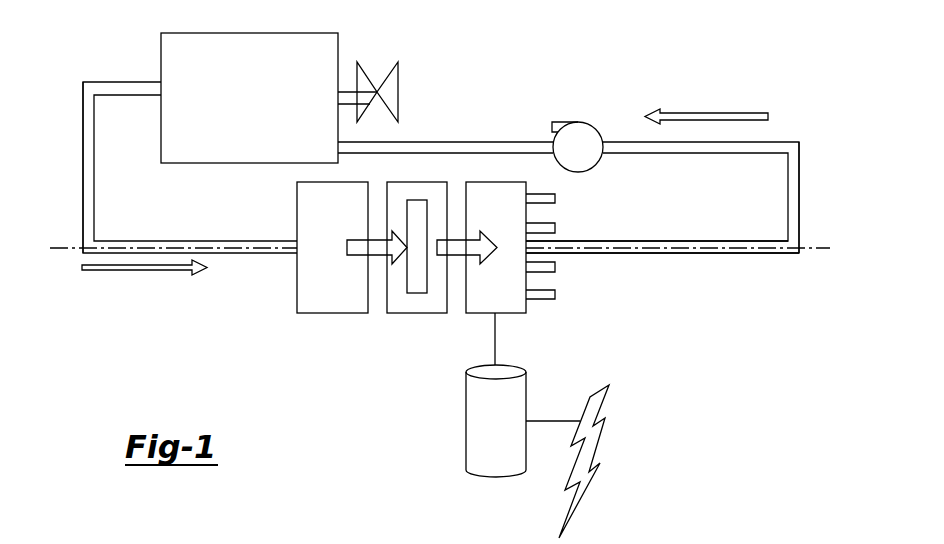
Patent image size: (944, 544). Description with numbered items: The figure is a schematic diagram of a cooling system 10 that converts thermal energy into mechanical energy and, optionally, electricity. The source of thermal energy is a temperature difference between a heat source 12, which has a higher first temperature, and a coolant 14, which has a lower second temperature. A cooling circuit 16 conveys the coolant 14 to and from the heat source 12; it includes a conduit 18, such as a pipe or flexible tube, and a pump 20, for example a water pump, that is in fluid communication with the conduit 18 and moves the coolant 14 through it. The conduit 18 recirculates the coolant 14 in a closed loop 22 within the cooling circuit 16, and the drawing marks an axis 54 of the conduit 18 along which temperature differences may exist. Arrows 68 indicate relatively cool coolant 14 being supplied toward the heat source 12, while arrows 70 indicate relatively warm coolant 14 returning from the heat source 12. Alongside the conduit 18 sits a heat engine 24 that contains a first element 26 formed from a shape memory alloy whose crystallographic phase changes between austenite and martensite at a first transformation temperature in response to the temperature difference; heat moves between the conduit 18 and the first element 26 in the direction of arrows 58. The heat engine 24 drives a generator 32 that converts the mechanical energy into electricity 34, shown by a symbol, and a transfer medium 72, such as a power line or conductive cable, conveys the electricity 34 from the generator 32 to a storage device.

The cooling system 10 is at (72, 534).
The heat source 12 is at (258, 109).
The coolant 14 is at (642, 251).
The cooling circuit 16 is at (819, 152).
The conduit 18 is at (82, 190).
The pump 20 is at (563, 122).
The closed loop 22 is at (62, 152).
The heat engine 24 is at (364, 373).
The first element 26 is at (415, 294).
The generator 32 is at (505, 424).
The electricity 34 is at (598, 446).
The axis 54 is at (815, 251).
The arrows 58 is at (377, 256).
The arrows 68 is at (714, 110).
The arrows 70 is at (135, 273).
The transfer medium 72 is at (497, 343).